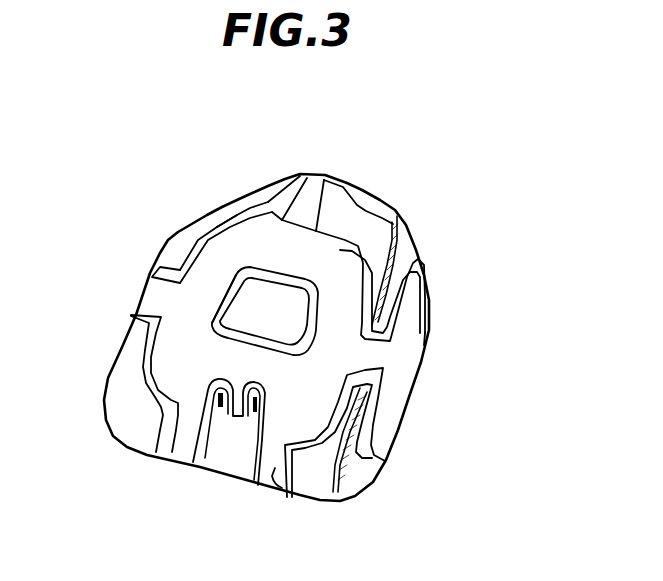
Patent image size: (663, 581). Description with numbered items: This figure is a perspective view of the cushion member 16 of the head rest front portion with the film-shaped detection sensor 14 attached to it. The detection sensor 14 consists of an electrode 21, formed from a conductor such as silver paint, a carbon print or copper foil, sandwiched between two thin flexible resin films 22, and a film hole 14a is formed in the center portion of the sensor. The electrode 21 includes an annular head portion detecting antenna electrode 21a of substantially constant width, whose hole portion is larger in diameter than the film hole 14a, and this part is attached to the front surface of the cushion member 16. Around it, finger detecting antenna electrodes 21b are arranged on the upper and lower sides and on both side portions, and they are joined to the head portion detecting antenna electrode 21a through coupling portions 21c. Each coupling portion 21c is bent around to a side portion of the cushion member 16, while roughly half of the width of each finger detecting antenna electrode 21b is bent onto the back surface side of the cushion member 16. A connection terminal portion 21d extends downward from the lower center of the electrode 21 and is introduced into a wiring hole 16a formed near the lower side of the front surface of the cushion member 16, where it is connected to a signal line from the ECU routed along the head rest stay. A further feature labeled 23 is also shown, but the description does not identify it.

The detection sensor 14 is at (396, 176).
The film hole 14a is at (273, 283).
The cushion member 16 is at (368, 222).
The wiring hole 16a is at (234, 400).
The electrode 21 is at (274, 212).
The head portion detecting antenna electrode 21a is at (227, 221).
The finger detecting antenna electrodes 21b is at (427, 345).
The coupling portions 21c is at (306, 188).
The connection terminal portion 21d is at (235, 396).
The films 22 is at (365, 268).
The flat portion 23 is at (228, 295).